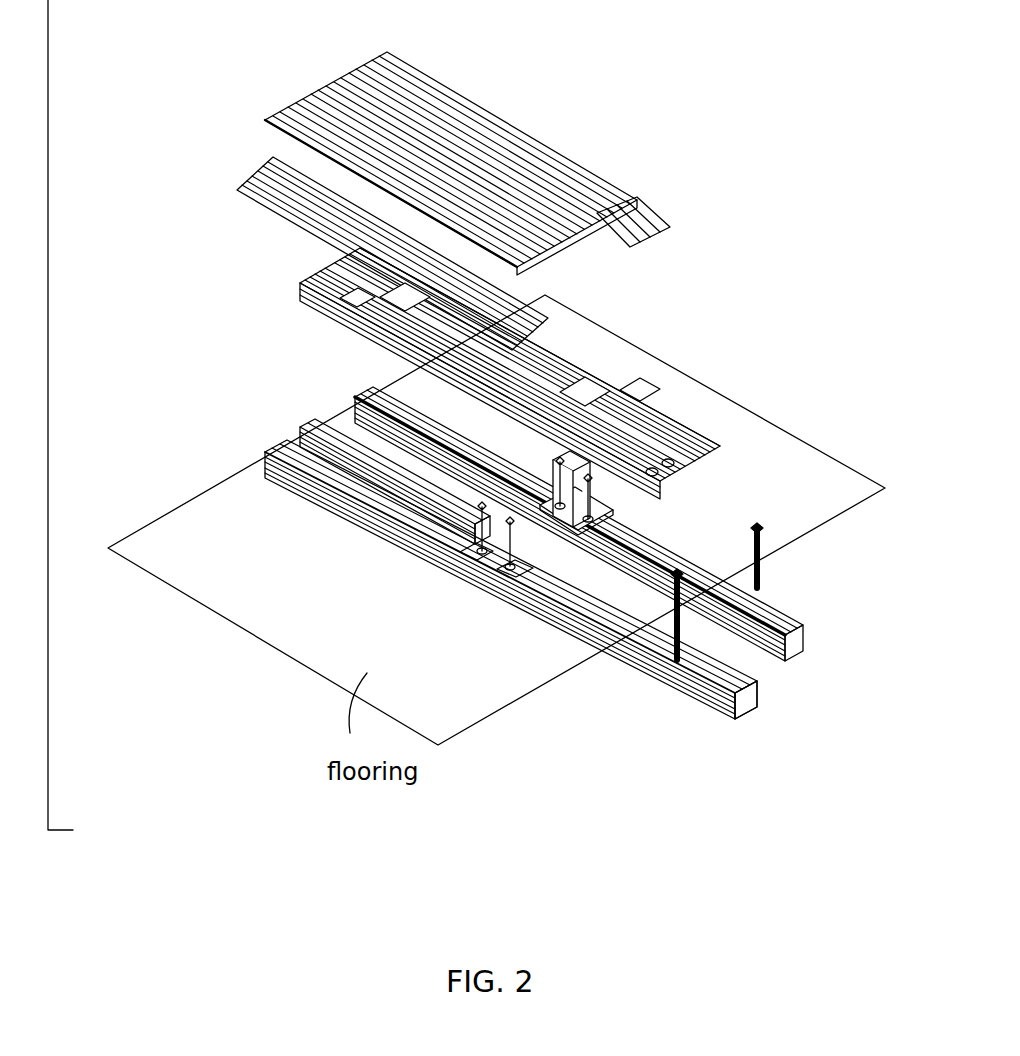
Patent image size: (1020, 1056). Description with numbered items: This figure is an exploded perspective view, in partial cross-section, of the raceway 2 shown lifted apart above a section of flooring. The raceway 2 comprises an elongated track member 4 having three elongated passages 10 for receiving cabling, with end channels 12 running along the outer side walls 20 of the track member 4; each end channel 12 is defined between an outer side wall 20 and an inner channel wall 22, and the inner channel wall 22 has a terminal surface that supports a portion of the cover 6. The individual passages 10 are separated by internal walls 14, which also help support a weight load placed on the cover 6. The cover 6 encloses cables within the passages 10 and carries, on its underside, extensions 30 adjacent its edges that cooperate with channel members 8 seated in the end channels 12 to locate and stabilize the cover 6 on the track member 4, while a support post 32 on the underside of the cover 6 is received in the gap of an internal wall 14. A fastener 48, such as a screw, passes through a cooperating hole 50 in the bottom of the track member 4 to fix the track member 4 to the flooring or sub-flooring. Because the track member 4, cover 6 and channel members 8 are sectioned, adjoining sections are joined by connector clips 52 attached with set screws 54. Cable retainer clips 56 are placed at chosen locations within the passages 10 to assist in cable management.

The raceway 2 is at (45, 415).
The track member 4 is at (793, 592).
The cover 6 is at (478, 66).
The channel member 8 is at (672, 212).
The elongated passage 10 is at (800, 617).
The end channel 12 is at (807, 620).
The internal wall 14 is at (647, 537).
The outer side wall 20 is at (617, 660).
The inner channel wall 22 is at (548, 565).
The extension 30 is at (517, 267).
The support post 32 is at (545, 258).
The fastener 48 is at (767, 530).
The cooperating hole 50 is at (355, 397).
The connector clip 52 is at (535, 572).
The set screw 54 is at (510, 545).
The cable retainer clip 56 is at (357, 298).